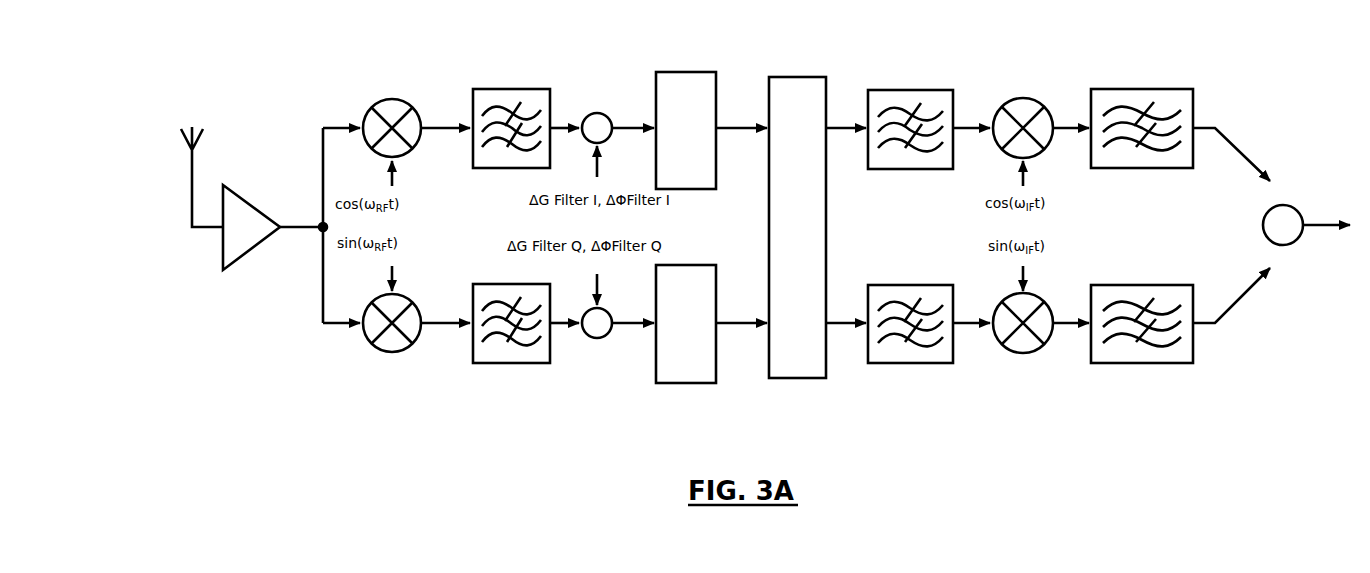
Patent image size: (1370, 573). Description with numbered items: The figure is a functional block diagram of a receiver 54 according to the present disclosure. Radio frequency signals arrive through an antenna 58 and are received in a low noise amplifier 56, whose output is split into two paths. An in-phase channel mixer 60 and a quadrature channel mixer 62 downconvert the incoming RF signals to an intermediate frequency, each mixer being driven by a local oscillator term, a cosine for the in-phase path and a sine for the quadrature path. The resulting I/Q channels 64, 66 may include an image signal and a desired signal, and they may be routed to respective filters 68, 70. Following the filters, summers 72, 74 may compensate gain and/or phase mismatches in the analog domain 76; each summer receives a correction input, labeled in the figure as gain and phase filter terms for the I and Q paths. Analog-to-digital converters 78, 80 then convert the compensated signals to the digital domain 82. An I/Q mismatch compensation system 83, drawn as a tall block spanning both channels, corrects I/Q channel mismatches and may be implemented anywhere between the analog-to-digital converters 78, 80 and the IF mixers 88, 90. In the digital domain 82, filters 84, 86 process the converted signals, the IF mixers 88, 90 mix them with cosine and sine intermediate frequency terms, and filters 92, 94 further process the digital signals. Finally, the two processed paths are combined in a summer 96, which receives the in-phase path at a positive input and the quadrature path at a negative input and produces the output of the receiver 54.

The receiver 54 is at (375, 446).
The low noise amplifier 56 is at (240, 192).
The antenna 58 is at (208, 130).
The in-phase channel mixer 60 is at (410, 100).
The quadrature channel mixer 62 is at (410, 298).
The I channel 64 is at (455, 131).
The Q channel 66 is at (430, 321).
The filter 68 is at (510, 89).
The filter 70 is at (492, 283).
The summer 72 is at (596, 112).
The summer 74 is at (597, 338).
The analog domain 76 is at (607, 400).
The analog-to-digital converter 78 is at (700, 72).
The analog-to-digital converter 80 is at (700, 265).
The digital domain 82 is at (1066, 403).
The I/Q mismatch compensation system 83 is at (822, 77).
The filter 84 is at (918, 90).
The filter 86 is at (920, 285).
The IF mixer 88 is at (1038, 104).
The IF mixer 90 is at (1040, 299).
The filter 92 is at (1165, 89).
The filter 94 is at (1150, 285).
The summer 96 is at (1268, 217).